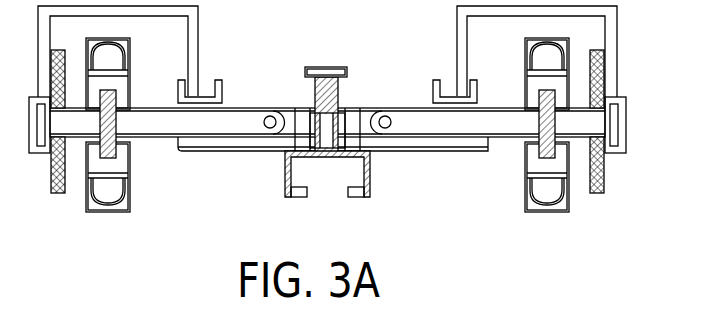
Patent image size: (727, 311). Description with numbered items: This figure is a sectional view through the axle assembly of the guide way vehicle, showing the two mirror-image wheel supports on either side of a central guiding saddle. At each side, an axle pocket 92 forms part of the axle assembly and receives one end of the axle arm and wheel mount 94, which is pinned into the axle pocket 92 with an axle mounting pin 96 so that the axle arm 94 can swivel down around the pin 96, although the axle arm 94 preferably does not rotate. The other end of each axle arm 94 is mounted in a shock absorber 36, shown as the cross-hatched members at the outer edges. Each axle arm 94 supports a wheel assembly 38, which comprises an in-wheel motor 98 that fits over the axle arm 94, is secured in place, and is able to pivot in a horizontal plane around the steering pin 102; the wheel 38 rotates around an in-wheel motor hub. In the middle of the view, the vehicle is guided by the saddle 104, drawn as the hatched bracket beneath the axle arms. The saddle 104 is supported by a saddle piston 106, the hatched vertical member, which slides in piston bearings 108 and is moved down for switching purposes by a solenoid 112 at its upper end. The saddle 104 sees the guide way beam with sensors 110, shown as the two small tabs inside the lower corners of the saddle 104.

The shock absorber 36 is at (57, 194).
The wheel assembly 38 is at (107, 212).
The axle pocket 92 is at (236, 97).
The axle arm and wheel mount 94 is at (178, 140).
The axle mounting pin 96 is at (270, 129).
The in-wheel motor 98 is at (123, 165).
The steering pin 102 is at (117, 95).
The saddle 104 is at (285, 192).
The saddle piston 106 is at (313, 92).
The piston bearings 108 is at (346, 118).
The sensors 110 is at (300, 197).
The solenoid 112 is at (330, 74).